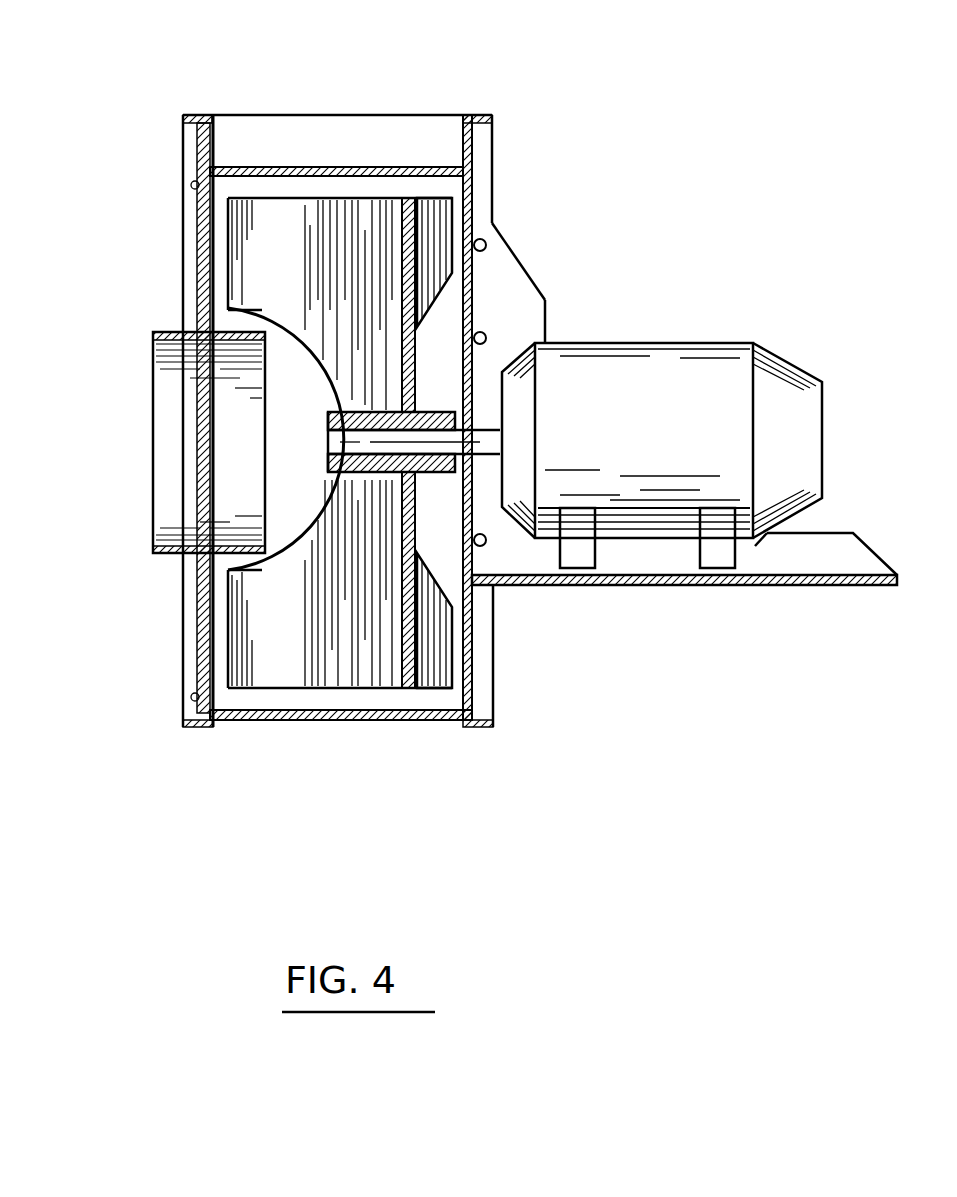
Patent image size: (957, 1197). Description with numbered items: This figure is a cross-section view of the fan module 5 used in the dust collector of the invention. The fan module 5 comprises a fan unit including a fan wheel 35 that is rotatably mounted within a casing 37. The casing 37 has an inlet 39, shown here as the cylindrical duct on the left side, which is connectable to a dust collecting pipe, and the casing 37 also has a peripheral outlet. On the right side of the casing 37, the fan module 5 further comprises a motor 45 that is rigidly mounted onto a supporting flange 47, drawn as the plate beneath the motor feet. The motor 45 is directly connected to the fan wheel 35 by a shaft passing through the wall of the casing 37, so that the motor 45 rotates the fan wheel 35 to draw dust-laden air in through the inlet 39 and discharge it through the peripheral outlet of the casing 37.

The fan module 5 is at (490, 104).
The fan wheel 35 is at (257, 242).
The casing 37 is at (312, 168).
The inlet 39 is at (185, 437).
The motor 45 is at (660, 383).
The supporting flange 47 is at (745, 585).